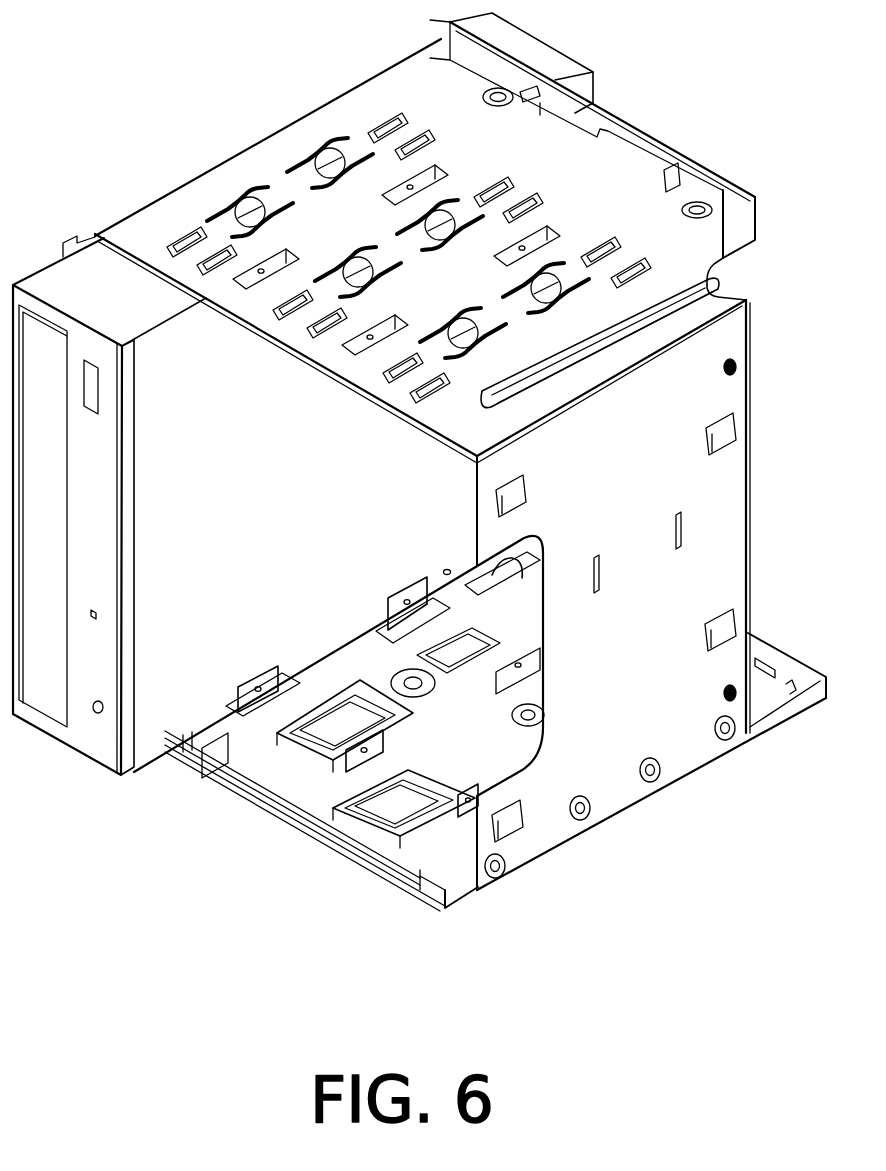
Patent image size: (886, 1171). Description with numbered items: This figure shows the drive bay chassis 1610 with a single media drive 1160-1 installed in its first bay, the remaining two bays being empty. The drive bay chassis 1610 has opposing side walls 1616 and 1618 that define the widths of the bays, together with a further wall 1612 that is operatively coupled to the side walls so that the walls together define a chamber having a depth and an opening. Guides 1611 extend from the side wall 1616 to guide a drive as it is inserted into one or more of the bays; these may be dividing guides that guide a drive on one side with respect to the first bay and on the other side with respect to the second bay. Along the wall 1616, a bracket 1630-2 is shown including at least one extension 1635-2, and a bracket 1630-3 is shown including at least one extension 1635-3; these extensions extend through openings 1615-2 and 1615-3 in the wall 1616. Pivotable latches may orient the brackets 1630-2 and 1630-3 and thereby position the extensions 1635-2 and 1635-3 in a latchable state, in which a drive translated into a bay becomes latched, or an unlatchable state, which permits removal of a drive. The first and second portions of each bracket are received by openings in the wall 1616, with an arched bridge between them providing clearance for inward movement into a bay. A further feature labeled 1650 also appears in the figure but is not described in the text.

The drive bay chassis 1610 is at (691, 67).
The side wall 1618 is at (472, 288).
The wall 1612 is at (653, 660).
The side wall 1616 is at (486, 726).
The guides 1611 is at (300, 646).
The media drive 1160-1 is at (240, 499).
The opening 1615-2 is at (291, 788).
The bracket 1630-2 is at (252, 758).
The extension 1635-2 is at (243, 752).
The opening 1615-3 is at (388, 854).
The bracket 1630-3 is at (337, 835).
The extension 1635-3 is at (326, 826).
The base rail 1650 is at (495, 800).